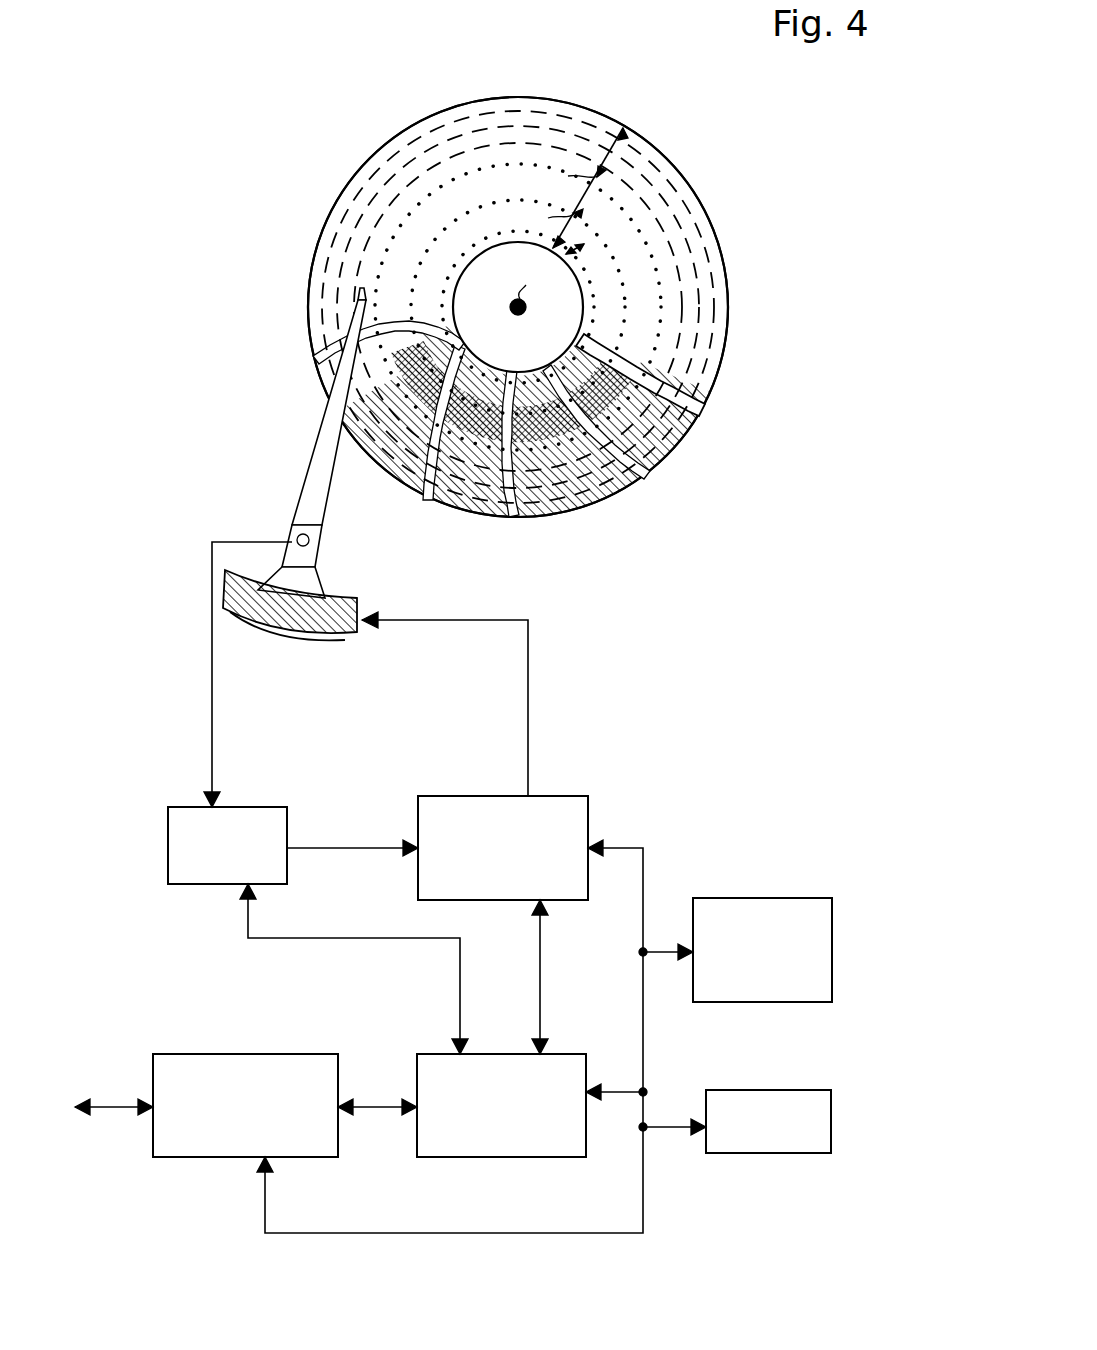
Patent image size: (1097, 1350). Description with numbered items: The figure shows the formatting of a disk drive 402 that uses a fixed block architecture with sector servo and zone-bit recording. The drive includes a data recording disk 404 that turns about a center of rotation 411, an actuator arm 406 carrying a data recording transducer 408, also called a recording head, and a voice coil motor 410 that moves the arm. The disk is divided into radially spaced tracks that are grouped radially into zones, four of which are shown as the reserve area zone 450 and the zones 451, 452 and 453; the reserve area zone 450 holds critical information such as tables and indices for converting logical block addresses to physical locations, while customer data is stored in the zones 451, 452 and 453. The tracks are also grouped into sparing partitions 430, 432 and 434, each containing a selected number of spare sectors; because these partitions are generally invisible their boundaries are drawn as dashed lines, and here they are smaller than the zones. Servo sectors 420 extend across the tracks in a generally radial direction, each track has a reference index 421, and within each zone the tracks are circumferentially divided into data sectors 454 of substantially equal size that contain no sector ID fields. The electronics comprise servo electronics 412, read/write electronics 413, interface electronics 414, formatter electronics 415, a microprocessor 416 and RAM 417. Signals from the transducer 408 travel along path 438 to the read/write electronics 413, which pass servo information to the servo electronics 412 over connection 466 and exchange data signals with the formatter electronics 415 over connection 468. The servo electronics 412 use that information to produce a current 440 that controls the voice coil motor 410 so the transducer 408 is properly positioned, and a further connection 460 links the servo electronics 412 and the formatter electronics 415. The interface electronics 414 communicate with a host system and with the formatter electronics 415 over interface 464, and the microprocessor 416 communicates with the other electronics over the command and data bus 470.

The disk drive 402 is at (395, 75).
The data recording disk 404 is at (350, 189).
The actuator arm 406 is at (320, 430).
The data recording transducer 408 is at (348, 298).
The voice coil motor 410 is at (340, 598).
The center of rotation 411 is at (518, 307).
The servo electronics 412 is at (436, 782).
The read/write electronics 413 is at (196, 884).
The interface electronics 414 is at (236, 1158).
The formatter electronics 415 is at (522, 1158).
The microprocessor 416 is at (834, 958).
The RAM 417 is at (834, 1120).
The servo sectors 420 is at (655, 478).
The reference index 421 is at (705, 410).
The sparing partition 430 is at (712, 252).
The sparing partition 432 is at (676, 222).
The sparing partition 434 is at (652, 198).
The read signal line 438 is at (210, 682).
The current 440 is at (530, 696).
The reserve area zone 450 is at (580, 258).
The zone 451 is at (597, 168).
The zone 452 is at (578, 204).
The zone 453 is at (560, 240).
The data sectors 454 is at (698, 436).
The servo-formatter bus 460 is at (542, 980).
The interface 464 is at (388, 1110).
The R/W to servo signal 466 is at (362, 836).
The formatter to R/W signal 468 is at (460, 988).
The command and data bus 470 is at (645, 876).